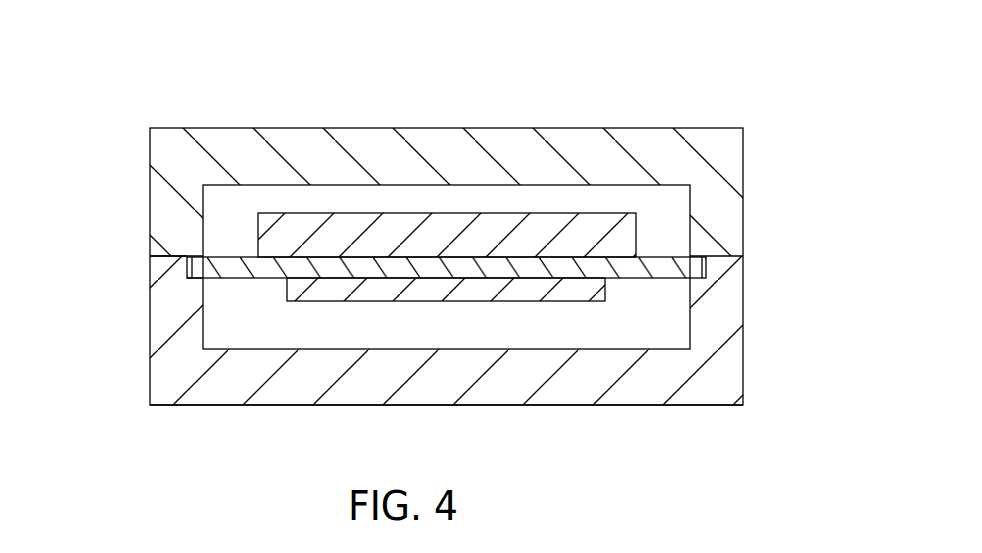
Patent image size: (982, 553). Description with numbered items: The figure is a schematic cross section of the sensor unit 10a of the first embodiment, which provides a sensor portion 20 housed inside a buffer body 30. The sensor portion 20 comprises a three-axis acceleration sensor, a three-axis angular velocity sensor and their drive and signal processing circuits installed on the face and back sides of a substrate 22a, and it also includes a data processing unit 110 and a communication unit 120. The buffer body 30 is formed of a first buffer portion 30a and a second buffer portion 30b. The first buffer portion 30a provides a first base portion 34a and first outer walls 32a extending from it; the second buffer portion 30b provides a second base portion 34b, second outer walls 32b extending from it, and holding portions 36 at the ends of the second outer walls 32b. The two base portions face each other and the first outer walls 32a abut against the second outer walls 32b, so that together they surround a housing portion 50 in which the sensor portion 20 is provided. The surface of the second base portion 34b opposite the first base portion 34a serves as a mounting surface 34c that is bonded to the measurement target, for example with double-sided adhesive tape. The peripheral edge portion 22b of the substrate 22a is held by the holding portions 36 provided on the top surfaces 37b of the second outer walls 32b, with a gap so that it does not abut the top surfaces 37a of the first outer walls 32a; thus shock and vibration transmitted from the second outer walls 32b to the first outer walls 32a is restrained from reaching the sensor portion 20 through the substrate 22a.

The sensor unit 10a is at (514, 63).
The sensor portion 20 is at (457, 213).
The substrate 22a is at (242, 272).
The peripheral edge portion 22b is at (708, 265).
The buffer body 30 is at (72, 192).
The first buffer portion 30a is at (160, 205).
The second buffer portion 30b is at (160, 305).
The first outer wall 32a is at (727, 213).
The second outer wall 32b is at (727, 305).
The first base portion 34a is at (372, 133).
The second base portion 34b is at (370, 384).
The mounting surface 34c is at (467, 405).
The holding portion 36 is at (203, 258).
The top surface of first outer wall 37a is at (176, 256).
The top surface of second outer wall 37b is at (176, 278).
The housing portion 50 is at (564, 193).
The data processing unit 110 is at (672, 391).
The communication unit 120 is at (582, 301).